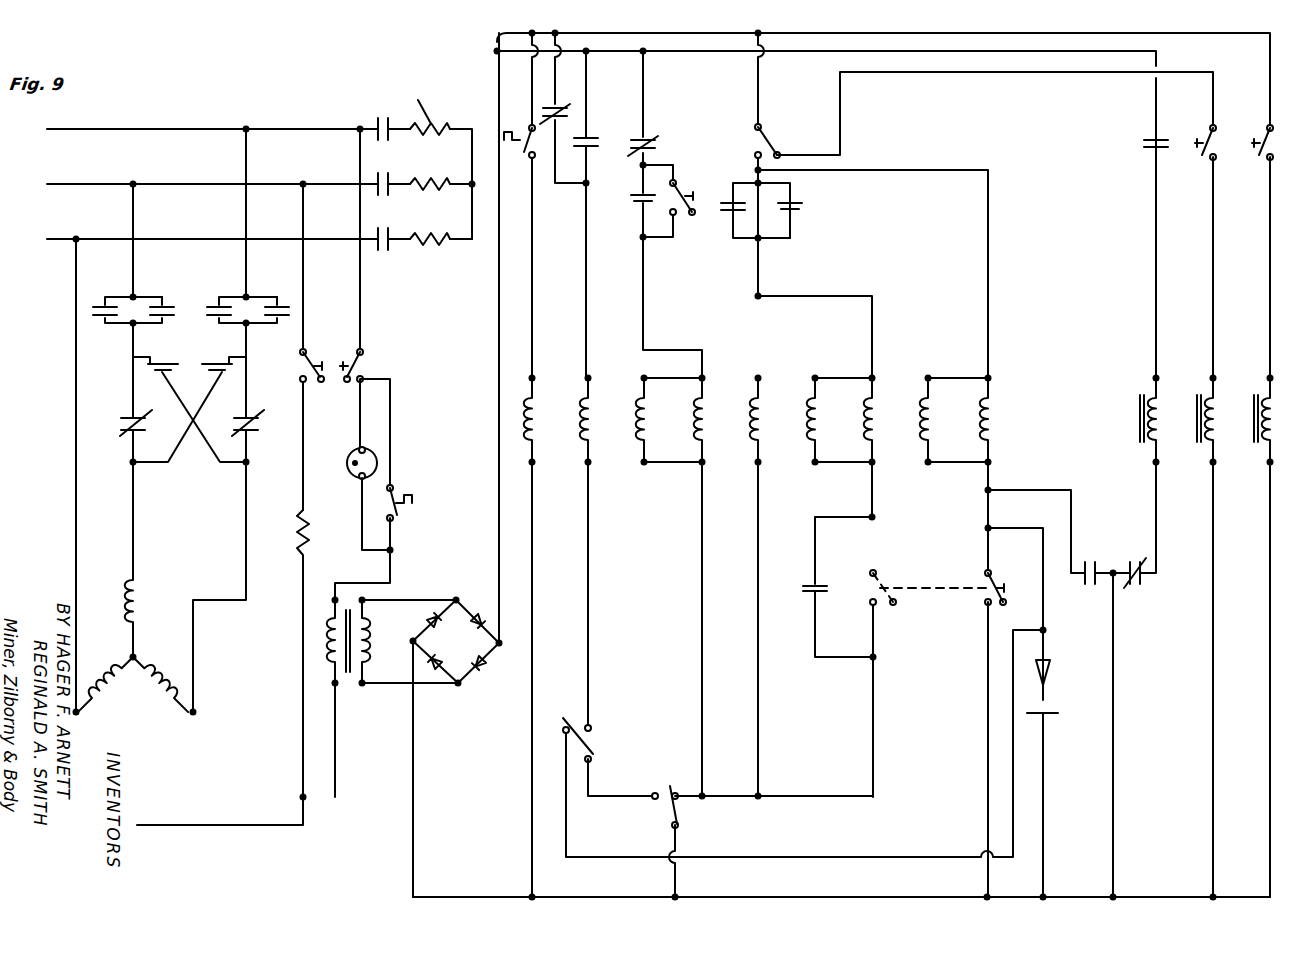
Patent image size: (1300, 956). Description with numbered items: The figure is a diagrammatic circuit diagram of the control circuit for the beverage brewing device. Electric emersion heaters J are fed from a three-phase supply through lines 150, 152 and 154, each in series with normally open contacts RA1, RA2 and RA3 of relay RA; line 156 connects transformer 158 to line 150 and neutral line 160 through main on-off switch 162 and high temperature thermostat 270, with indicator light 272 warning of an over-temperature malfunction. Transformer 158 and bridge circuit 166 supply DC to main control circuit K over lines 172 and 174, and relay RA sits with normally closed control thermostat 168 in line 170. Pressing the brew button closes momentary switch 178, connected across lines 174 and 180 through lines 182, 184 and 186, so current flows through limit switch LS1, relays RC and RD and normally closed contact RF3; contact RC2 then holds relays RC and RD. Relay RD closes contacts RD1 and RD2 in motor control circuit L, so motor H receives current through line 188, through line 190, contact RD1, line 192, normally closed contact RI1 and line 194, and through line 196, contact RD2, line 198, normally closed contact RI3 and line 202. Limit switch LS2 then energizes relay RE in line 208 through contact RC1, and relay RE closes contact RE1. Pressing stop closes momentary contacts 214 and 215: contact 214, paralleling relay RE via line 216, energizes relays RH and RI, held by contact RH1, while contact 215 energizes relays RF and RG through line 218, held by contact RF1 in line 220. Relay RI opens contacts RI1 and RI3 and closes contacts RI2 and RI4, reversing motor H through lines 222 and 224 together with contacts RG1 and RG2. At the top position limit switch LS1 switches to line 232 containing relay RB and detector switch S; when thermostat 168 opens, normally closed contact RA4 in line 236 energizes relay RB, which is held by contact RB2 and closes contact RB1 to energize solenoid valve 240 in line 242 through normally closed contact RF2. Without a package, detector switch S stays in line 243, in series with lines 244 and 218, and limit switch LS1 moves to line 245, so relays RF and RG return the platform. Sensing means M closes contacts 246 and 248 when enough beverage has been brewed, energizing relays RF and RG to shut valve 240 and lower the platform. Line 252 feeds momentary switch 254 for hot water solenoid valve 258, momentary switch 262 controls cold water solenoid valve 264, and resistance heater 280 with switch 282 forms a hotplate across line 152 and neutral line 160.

The power supply line 150 is at (167, 132).
The power supply line 152 is at (126, 188).
The power supply line 154 is at (108, 240).
The line 156 is at (369, 288).
The transformer 158 is at (366, 584).
The neutral line 160 is at (254, 814).
The main on-off switch 162 is at (366, 362).
The bridge circuit 166 is at (476, 594).
The control thermostat 168 is at (525, 153).
The line 170 is at (532, 304).
The line 172 is at (498, 40).
The line 174 is at (449, 896).
The momentary-on switch 178 is at (690, 184).
The line 180 is at (497, 51).
The line 182 is at (683, 852).
The line 184 is at (757, 808).
The line 186 is at (702, 660).
The line 188 is at (70, 266).
The line 190 is at (128, 268).
The line 192 is at (133, 354).
The line 194 is at (133, 548).
The line 196 is at (243, 254).
The line 198 is at (248, 375).
The line 202 is at (244, 548).
The line 208 is at (758, 576).
The momentary contact 214 is at (885, 586).
The momentary contact 215 is at (1030, 562).
The line 216 is at (842, 294).
The line 218 is at (992, 284).
The line 220 is at (1113, 704).
The line 222 is at (204, 462).
The line 224 is at (182, 462).
The line 232 is at (590, 592).
The line 236 is at (562, 210).
The solenoid valve 240 is at (1136, 448).
The line 242 is at (1156, 298).
The line 243 is at (822, 852).
The line 244 is at (996, 528).
The line 245 is at (602, 792).
The contact 246 is at (1048, 662).
The contact 248 is at (1062, 712).
The line 252 is at (842, 146).
The momentary switch 254 is at (1204, 162).
The hot water solenoid valve 258 is at (1201, 448).
The momentary switch 262 is at (1260, 162).
The cold water solenoid valve 264 is at (1261, 448).
The high temperature thermostat 270 is at (398, 492).
The indicator light 272 is at (348, 450).
The resistance heater 280 is at (297, 540).
The switch 282 is at (317, 351).
The relay RA is at (510, 394).
The relay RB is at (578, 394).
The relay RC is at (692, 400).
The relay RD is at (636, 394).
The relay RE is at (750, 394).
The relay RF is at (1002, 430).
The relay RG is at (919, 392).
The relay RH is at (863, 394).
The relay RI is at (808, 394).
The normally open contact RA1 is at (374, 102).
The normally open contact RA2 is at (388, 172).
The normally open contact RA3 is at (388, 226).
The normally closed contact RA4 is at (560, 104).
The normally open contact RB1 is at (1142, 146).
The normally open contact RB2 is at (598, 140).
The normally open contact RC1 is at (732, 222).
The normally open contact RC2 is at (620, 222).
The normally open contact RD1 is at (92, 307).
The normally open contact RD2 is at (196, 298).
The normally open contact RE1 is at (800, 210).
The normally open contact RF1 is at (1092, 584).
The normally closed contact RF2 is at (1142, 584).
The normally closed contact RF3 is at (662, 140).
The normally open contact RG1 is at (178, 298).
The normally open contact RG2 is at (296, 298).
The normally open contact RH1 is at (802, 586).
The normally closed contact RI1 is at (118, 430).
The normally open contact RI2 is at (183, 347).
The normally closed contact RI3 is at (260, 430).
The normally open contact RI4 is at (233, 347).
The limit switch LS1 is at (667, 816).
The limit switch LS2 is at (768, 134).
The detector switch S is at (602, 746).
The sensing means M is at (1048, 702).
The motor H is at (68, 585).
The electric emersion heaters J is at (430, 112).
The main control circuit K is at (396, 824).
The motor control circuit L is at (68, 415).